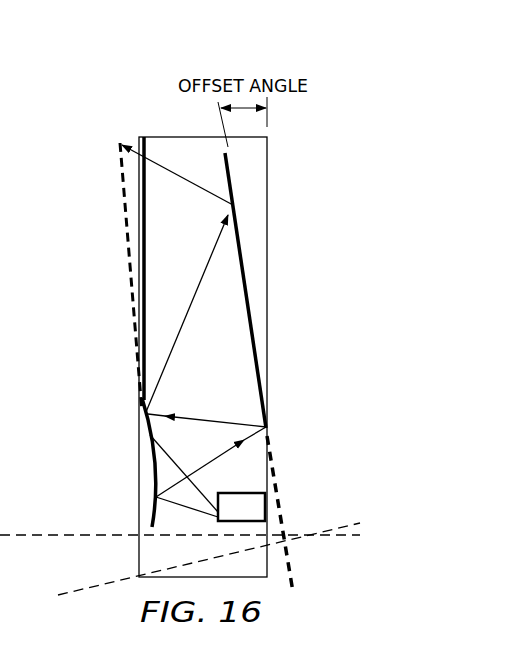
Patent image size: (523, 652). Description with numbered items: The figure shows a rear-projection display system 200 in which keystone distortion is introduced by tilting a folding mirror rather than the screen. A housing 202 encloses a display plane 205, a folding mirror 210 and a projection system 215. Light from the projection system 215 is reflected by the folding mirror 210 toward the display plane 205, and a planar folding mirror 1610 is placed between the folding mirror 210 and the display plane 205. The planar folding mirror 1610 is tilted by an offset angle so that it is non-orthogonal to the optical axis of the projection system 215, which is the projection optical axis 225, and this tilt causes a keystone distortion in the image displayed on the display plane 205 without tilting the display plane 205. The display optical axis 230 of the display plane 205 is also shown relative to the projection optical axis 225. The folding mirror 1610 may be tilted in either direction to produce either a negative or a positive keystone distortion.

The rear-projection display system 200 is at (147, 82).
The housing 202 is at (137, 255).
The display plane 205 is at (122, 188).
The folding mirror 210 is at (150, 460).
The projection system 215 is at (256, 507).
The projection optical axis 225 is at (45, 533).
The display optical axis 230 is at (78, 590).
The planar folding mirror 1610 is at (254, 368).